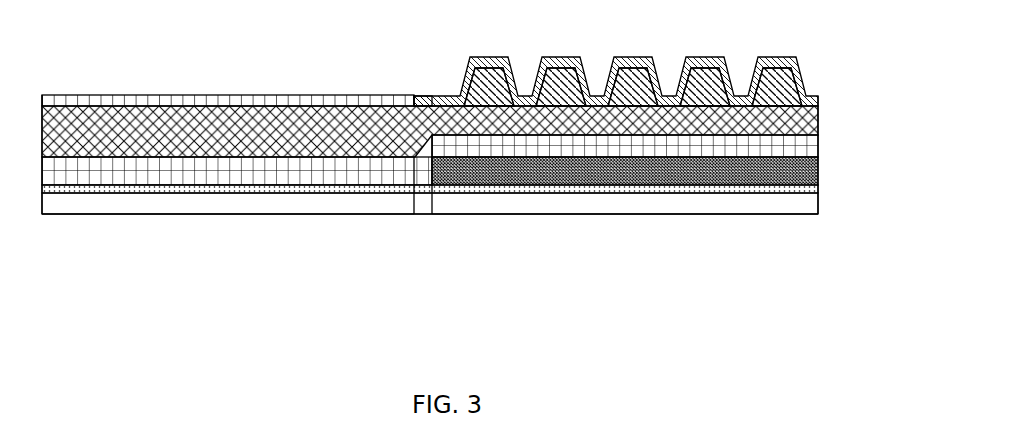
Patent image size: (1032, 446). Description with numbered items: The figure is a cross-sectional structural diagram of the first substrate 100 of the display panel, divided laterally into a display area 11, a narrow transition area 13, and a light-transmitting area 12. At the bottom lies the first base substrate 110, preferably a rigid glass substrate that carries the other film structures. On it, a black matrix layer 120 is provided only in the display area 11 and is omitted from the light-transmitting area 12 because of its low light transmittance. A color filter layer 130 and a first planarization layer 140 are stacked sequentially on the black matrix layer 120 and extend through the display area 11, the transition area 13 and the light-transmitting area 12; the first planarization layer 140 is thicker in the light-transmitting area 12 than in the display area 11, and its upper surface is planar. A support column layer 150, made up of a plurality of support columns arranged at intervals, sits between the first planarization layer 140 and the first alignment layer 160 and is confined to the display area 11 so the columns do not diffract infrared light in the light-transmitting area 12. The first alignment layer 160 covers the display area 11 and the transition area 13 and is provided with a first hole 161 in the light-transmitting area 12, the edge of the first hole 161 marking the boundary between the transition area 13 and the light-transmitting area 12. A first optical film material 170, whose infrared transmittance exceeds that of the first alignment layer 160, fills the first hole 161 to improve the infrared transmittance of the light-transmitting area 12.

The first substrate 100 is at (474, 153).
The first base substrate 110 is at (818, 192).
The black matrix layer 120 is at (818, 162).
The color filter layer 130 is at (818, 143).
The first planarization layer 140 is at (813, 118).
The support column layer 150 is at (713, 88).
The first alignment layer 160 is at (797, 73).
The first hole 161 is at (413, 102).
The first optical film material 170 is at (269, 102).
The display area 11 is at (633, 214).
The light-transmitting area 12 is at (233, 214).
The transition area 13 is at (423, 214).